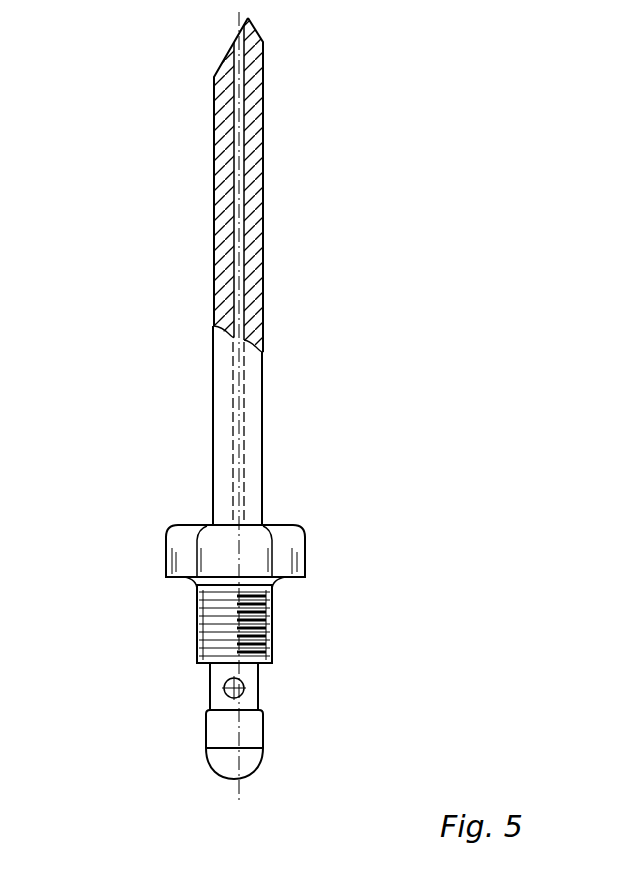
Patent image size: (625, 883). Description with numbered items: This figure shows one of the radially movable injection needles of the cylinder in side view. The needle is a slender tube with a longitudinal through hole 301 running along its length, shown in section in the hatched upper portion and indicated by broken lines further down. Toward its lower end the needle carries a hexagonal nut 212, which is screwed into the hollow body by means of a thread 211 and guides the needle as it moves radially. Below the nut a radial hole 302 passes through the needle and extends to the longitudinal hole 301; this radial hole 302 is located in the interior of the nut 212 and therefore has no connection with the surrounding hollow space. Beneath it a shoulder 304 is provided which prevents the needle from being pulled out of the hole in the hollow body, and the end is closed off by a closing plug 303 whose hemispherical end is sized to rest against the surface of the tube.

The longitudinal through hole 301 is at (263, 221).
The nut 212 is at (303, 562).
The thread 211 is at (197, 614).
The radial hole 302 is at (238, 675).
The closing plug 303 is at (243, 757).
The shoulder 304 is at (210, 718).